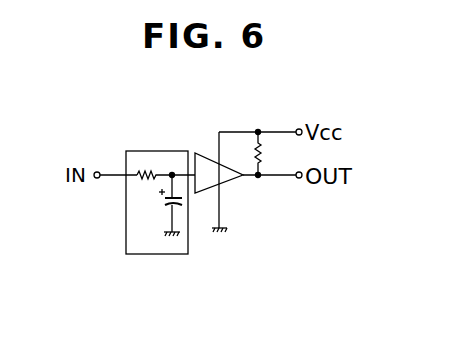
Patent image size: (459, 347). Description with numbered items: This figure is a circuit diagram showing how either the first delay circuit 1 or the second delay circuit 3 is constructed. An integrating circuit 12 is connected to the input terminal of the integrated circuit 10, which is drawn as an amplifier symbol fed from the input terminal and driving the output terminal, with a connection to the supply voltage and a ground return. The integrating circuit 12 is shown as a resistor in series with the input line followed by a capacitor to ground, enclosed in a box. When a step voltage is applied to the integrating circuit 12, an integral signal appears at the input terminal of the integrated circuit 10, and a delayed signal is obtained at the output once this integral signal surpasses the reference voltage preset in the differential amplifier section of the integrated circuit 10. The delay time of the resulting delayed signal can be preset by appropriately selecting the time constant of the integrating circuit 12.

The first delay circuit 1 is at (155, 135).
The second delay circuit 3 is at (155, 135).
The integrating circuit 12 is at (126, 243).
The integrated circuit 10 is at (228, 182).